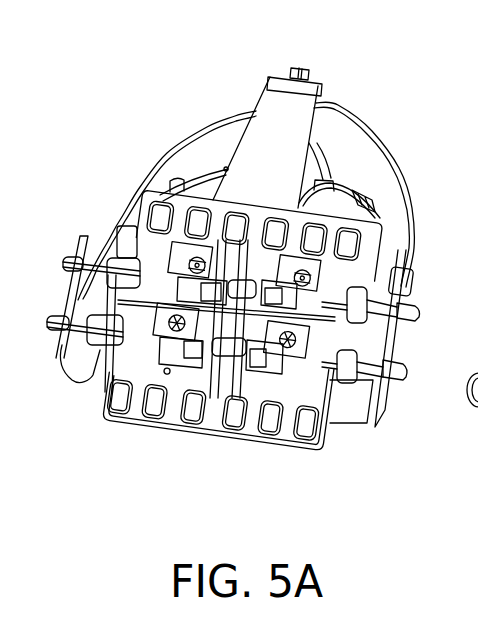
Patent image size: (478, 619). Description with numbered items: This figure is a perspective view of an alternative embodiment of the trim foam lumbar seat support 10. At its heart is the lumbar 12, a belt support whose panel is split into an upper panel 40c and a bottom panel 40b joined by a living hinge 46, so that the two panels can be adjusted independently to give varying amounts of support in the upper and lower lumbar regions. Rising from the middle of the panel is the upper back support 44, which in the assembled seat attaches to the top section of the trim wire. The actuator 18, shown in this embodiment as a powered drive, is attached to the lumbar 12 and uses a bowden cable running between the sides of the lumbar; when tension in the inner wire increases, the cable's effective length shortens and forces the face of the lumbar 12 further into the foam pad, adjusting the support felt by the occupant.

The trim foam lumbar seat support 10 is at (110, 37).
The lumbar 12 is at (326, 443).
The actuator 18 is at (198, 184).
The bottom panel 40b is at (130, 366).
The upper grip plate 40c is at (145, 247).
The upper back support 44 is at (290, 117).
The living hinge 46 is at (330, 328).